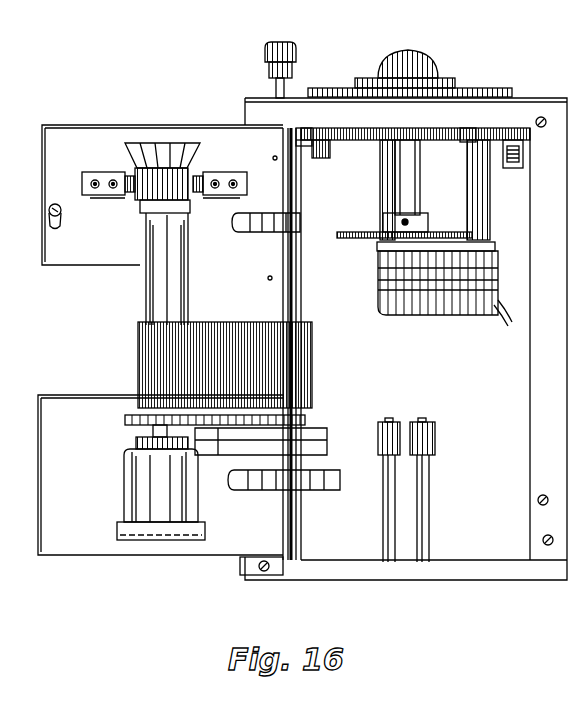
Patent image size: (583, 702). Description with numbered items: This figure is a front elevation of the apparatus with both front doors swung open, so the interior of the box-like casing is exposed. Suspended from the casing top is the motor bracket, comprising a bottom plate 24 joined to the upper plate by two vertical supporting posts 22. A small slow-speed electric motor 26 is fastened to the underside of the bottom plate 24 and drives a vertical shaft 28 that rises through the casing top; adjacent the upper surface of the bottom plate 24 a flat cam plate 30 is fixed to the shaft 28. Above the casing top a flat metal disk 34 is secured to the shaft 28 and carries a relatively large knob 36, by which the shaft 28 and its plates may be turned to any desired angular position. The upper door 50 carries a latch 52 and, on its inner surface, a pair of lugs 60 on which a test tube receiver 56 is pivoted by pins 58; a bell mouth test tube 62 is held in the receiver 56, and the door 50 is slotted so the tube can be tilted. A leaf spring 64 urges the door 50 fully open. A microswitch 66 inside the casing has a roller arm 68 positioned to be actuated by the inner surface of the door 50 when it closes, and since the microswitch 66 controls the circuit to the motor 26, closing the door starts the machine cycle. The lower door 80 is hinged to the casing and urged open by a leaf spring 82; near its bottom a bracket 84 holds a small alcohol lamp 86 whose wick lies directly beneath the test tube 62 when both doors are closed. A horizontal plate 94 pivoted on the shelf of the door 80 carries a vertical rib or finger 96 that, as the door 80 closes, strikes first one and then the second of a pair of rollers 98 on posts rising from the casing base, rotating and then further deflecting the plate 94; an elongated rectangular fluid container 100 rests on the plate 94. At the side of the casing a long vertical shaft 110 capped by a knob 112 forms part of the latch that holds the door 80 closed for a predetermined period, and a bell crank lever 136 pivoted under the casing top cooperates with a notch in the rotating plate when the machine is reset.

The vertical supporting posts 22 is at (380, 167).
The bottom plate 24 is at (385, 246).
The electric motor 26 is at (384, 296).
The vertical shaft 28 is at (420, 168).
The cam plate 30 is at (360, 232).
The metal disk 34 is at (340, 88).
The knob 36 is at (438, 64).
The upper door 50 is at (55, 147).
The latch 52 is at (49, 215).
The test tube receiver 56 is at (138, 200).
The pins 58 is at (126, 176).
The lugs 60 is at (204, 176).
The bell mouth test tube 62 is at (176, 145).
The leaf spring 64 is at (254, 232).
The microswitch 66 is at (304, 128).
The roller arm 68 is at (511, 168).
The lower door 80 is at (82, 400).
The leaf spring 82 is at (248, 490).
The bracket 84 is at (124, 530).
The alcohol lamp 86 is at (132, 483).
The horizontal plate 94 is at (138, 418).
The vertical rib or finger 96 is at (327, 452).
The rollers 98 is at (420, 520).
The fluid container 100 is at (312, 352).
The vertical shaft 110 is at (276, 84).
The knob 112 is at (290, 46).
The bell crank lever 136 is at (468, 134).